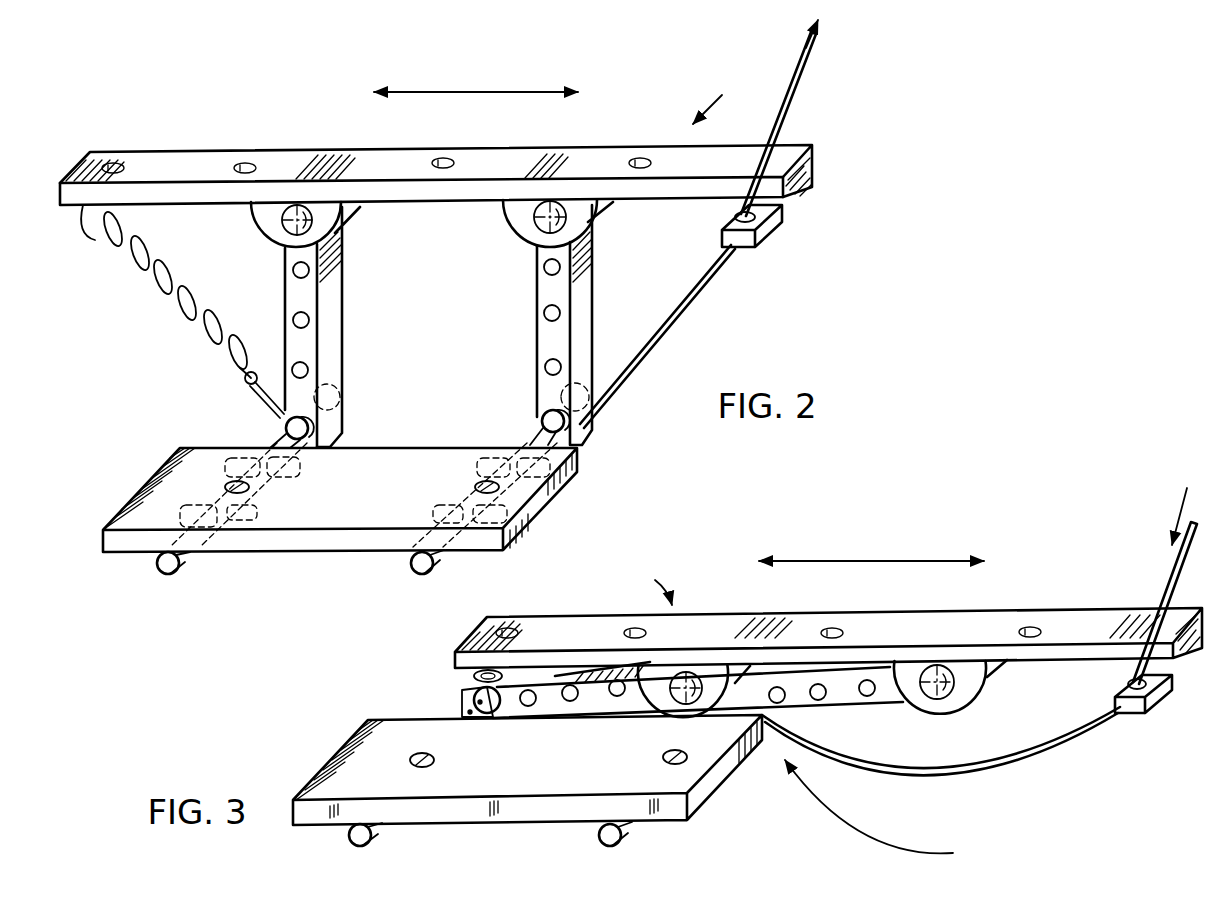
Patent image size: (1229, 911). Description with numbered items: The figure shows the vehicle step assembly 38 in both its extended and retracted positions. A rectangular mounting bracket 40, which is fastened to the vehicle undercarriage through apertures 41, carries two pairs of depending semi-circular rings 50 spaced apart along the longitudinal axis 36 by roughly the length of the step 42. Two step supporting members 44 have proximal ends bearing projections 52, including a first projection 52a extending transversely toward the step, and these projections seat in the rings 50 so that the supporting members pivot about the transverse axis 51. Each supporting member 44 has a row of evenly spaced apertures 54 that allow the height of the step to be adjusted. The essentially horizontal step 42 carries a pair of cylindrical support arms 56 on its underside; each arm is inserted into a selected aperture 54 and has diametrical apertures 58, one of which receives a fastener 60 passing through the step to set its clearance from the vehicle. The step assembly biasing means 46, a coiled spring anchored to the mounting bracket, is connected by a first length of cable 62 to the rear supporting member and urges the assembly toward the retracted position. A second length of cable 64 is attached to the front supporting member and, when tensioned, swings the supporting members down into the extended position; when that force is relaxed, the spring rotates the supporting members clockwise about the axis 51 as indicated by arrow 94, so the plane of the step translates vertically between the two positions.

In FIG. 2, the longitudinal axis 36 is at (500, 92).
In FIG. 3, the longitudinal axis 36 is at (850, 561).
In FIG. 2, the step assembly 38 is at (720, 91).
In FIG. 3, the step assembly 38 is at (648, 578).
In FIG. 2, the mounting bracket 40 is at (192, 160).
In FIG. 3, the mounting bracket 40 is at (1083, 624).
In FIG. 2, the apertures 41 is at (447, 163).
In FIG. 3, the apertures 41 is at (1032, 632).
In FIG. 2, the step 42 is at (283, 550).
In FIG. 3, the step 42 is at (553, 808).
In FIG. 2, the step supporting members 44 is at (286, 278).
In FIG. 2, the step assembly biasing means 46 is at (92, 244).
In FIG. 3, the step assembly biasing means 46 is at (473, 681).
In FIG. 2, the semi-circular rings 50 is at (348, 240).
In FIG. 2, the transverse axis 51 is at (537, 218).
In FIG. 3, the transverse axis 51 is at (937, 694).
In FIG. 3, the projections 52 is at (655, 708).
In FIG. 2, the first projection 52a is at (298, 216).
In FIG. 2, the apertures 54 is at (309, 370).
In FIG. 2, the cylindrical support arms 56 is at (420, 576).
In FIG. 2, the apertures 58 is at (586, 426).
In FIG. 3, the apertures 58 is at (868, 696).
In FIG. 2, the fastener 60 is at (503, 481).
In FIG. 2, the first length of cable 62 is at (268, 400).
In FIG. 2, the second length of cable 64 is at (668, 332).
In FIG. 3, the second length of cable 64 is at (1068, 750).
In FIG. 3, the arrow 94 is at (880, 838).